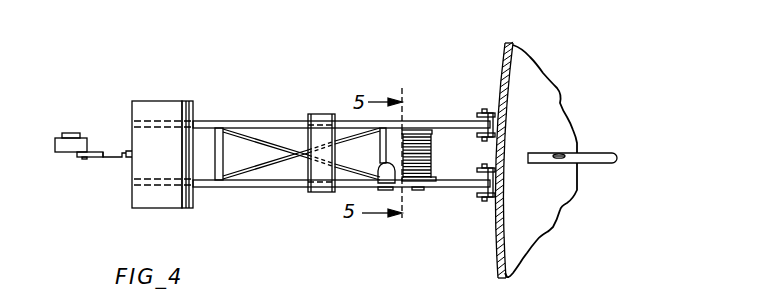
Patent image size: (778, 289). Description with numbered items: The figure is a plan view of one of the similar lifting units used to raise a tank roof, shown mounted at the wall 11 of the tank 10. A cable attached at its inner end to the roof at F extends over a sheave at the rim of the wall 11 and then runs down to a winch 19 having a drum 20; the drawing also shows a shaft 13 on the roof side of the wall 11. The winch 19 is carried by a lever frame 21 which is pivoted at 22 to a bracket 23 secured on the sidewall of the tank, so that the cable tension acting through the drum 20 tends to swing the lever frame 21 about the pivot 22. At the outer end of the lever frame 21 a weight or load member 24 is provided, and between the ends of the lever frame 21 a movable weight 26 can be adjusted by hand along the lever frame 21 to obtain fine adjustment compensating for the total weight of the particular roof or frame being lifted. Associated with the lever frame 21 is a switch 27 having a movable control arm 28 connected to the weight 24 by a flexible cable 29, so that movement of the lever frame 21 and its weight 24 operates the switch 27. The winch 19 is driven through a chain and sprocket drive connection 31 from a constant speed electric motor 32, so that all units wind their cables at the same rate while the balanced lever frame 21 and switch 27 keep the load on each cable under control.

The vehicle body 10 is at (548, 115).
The wall 11 is at (498, 227).
The shaft 13 is at (600, 158).
The roof attachment point F is at (560, 154).
The winch 19 is at (437, 177).
The drum 20 is at (430, 153).
The lever frame 21 is at (252, 123).
The pivot 22 is at (483, 112).
The bracket 23 is at (477, 115).
The weight or load member 24 is at (158, 113).
The movable weight 26 is at (323, 115).
The switch 27 is at (63, 145).
The movable control arm 28 is at (93, 157).
The flexible cable 29 is at (112, 160).
The chain and sprocket drive connection 31 is at (403, 191).
The constant speed electric motor 32 is at (380, 170).